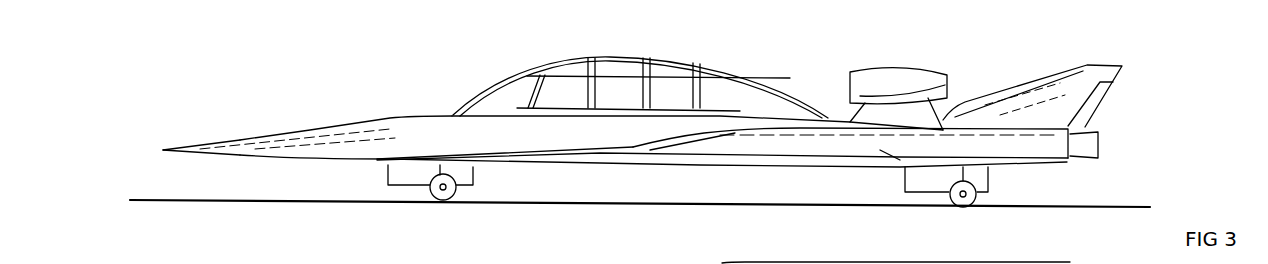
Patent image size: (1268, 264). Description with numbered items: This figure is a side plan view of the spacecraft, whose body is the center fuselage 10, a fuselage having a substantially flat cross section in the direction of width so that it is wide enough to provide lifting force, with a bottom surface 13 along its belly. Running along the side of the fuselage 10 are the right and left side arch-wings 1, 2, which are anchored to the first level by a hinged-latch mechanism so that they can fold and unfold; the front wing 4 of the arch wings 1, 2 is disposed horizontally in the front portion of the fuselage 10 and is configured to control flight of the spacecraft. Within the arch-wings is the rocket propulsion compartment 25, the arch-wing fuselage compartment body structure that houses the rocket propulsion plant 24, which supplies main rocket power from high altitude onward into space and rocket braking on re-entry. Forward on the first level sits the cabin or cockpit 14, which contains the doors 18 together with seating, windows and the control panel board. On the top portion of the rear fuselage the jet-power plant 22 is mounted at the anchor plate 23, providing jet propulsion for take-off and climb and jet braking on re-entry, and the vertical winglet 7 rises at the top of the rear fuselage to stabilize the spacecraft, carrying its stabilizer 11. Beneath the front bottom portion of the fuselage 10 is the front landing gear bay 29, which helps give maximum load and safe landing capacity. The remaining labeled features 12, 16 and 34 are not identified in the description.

The arch-wing 1 is at (760, 262).
The arch-wing 2 is at (790, 145).
The front wing 4 is at (520, 157).
The vertical winglet 7 is at (1100, 85).
The fuselage 10 is at (428, 115).
The stabilizer 11 is at (1085, 107).
The nose section upper surface 12 is at (315, 130).
The bottom surface 13 is at (353, 162).
The first level cabin 14 is at (627, 83).
The nose tip 16 is at (230, 141).
The door 18 is at (678, 97).
The jet-power plant 22 is at (873, 90).
The anchor plate 23 is at (917, 115).
The rocket propulsion plant 24 is at (1088, 145).
The rocket propulsion compartment 25 is at (880, 145).
The front landing gear bay 29 is at (428, 178).
The lower structure 34 is at (667, 263).